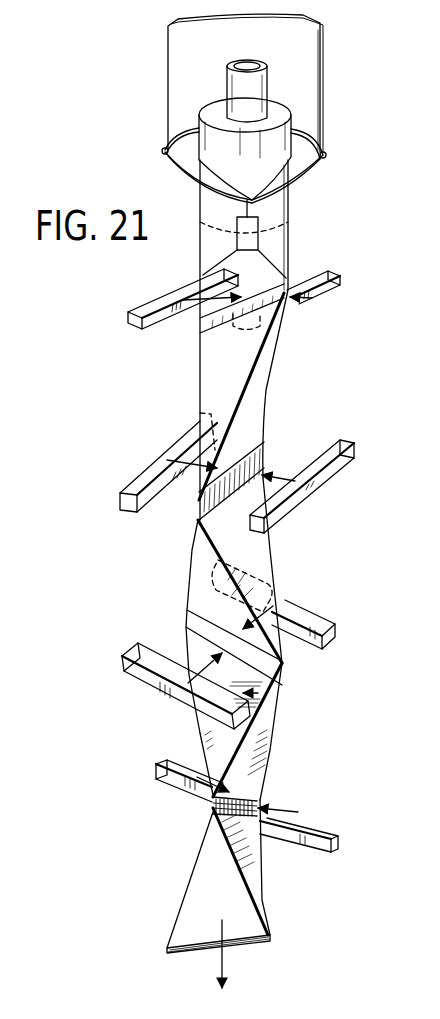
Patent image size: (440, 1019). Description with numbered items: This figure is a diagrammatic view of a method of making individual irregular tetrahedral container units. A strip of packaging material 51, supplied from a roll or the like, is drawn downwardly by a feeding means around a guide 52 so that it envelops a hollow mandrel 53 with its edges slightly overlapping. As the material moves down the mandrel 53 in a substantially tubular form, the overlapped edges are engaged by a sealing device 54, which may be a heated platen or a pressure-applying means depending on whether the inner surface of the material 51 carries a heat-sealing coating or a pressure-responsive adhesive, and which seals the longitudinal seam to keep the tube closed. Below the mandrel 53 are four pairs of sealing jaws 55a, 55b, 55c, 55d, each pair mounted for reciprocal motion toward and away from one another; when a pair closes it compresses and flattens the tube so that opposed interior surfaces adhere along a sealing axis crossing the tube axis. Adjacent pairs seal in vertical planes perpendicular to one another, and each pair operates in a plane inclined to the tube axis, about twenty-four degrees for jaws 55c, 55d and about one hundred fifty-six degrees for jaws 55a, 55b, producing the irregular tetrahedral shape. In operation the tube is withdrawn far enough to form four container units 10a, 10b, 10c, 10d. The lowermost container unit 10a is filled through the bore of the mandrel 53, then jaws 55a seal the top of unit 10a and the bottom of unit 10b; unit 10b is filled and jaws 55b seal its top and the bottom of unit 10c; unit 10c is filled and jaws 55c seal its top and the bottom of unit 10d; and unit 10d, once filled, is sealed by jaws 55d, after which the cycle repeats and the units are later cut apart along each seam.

The strip of packaging material 51 is at (308, 67).
The guide 52 is at (325, 156).
The hollow mandrel 53 is at (270, 143).
The sealing device 54 is at (258, 232).
The lowermost container unit 10a is at (198, 883).
The container unit 10b is at (262, 763).
The container unit 10c is at (280, 557).
The container unit 10d is at (268, 388).
The sealing jaws 55a is at (183, 781).
The sealing jaws 55b is at (165, 668).
The sealing jaws 55c is at (157, 466).
The sealing jaws 55d is at (163, 300).